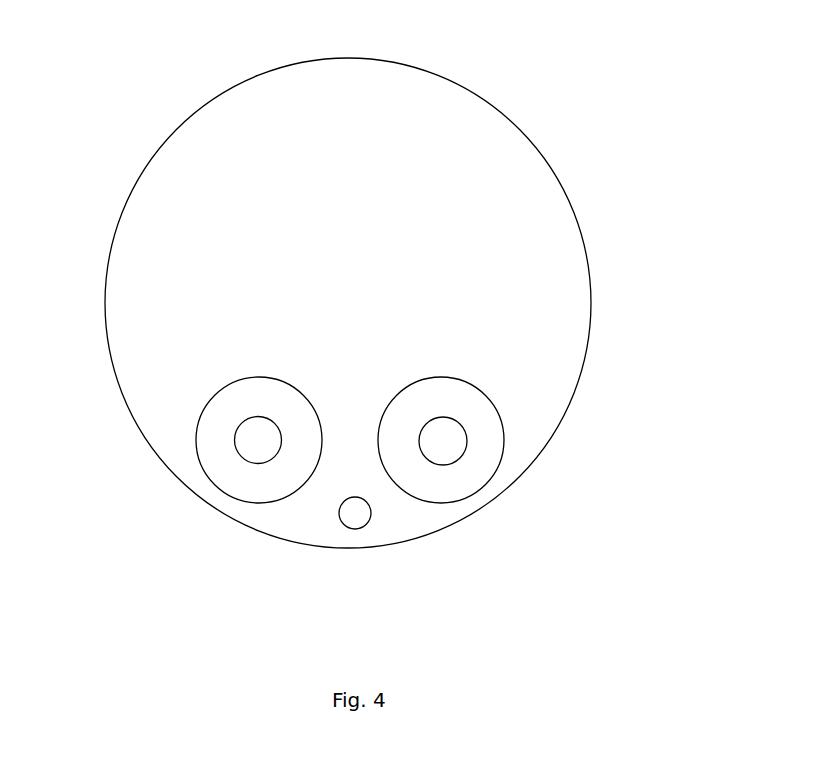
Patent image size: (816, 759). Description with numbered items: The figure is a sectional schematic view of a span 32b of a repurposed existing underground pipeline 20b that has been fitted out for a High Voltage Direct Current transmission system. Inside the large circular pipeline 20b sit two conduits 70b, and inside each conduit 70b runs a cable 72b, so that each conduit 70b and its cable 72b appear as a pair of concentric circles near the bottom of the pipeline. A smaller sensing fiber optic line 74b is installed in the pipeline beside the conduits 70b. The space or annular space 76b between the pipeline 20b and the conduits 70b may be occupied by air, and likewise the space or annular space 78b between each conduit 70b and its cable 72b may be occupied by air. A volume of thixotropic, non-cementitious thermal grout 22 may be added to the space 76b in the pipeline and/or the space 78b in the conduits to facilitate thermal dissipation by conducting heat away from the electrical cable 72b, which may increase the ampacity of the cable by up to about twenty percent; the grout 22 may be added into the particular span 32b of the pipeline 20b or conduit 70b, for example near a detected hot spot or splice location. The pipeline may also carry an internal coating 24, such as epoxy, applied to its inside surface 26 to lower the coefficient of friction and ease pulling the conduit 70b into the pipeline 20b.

The repurposed existing underground pipeline 20b is at (575, 213).
The span 32b is at (593, 102).
The thixotropic, non-cementitious thermal grout 22 is at (232, 167).
The internal coating 24 is at (303, 529).
The inside surface 26 is at (310, 529).
The conduit 70b is at (500, 417).
The cable 72b is at (467, 450).
The sensing fiber optic line 74b is at (371, 516).
The annular space 76b is at (368, 335).
The annular space 78b is at (282, 405).